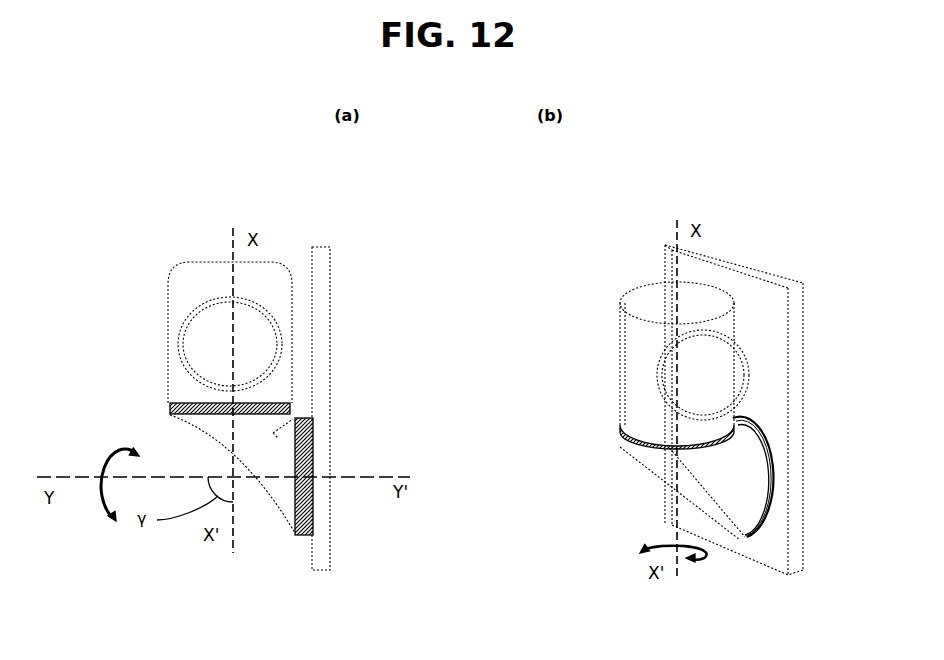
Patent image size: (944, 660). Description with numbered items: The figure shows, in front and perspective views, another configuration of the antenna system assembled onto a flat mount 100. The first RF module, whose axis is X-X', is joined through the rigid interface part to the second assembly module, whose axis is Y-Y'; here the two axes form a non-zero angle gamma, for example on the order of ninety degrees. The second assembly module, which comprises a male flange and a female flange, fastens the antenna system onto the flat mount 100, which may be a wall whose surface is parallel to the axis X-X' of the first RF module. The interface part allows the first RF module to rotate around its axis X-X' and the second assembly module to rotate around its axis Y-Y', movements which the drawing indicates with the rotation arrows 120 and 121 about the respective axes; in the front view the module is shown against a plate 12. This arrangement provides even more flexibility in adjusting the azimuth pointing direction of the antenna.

The mounting plate 12 is at (320, 304).
The flat mount 100 is at (773, 363).
The rotation about Y-Y' axis 120 is at (127, 437).
The rotation about X-X' axis 121 is at (658, 543).